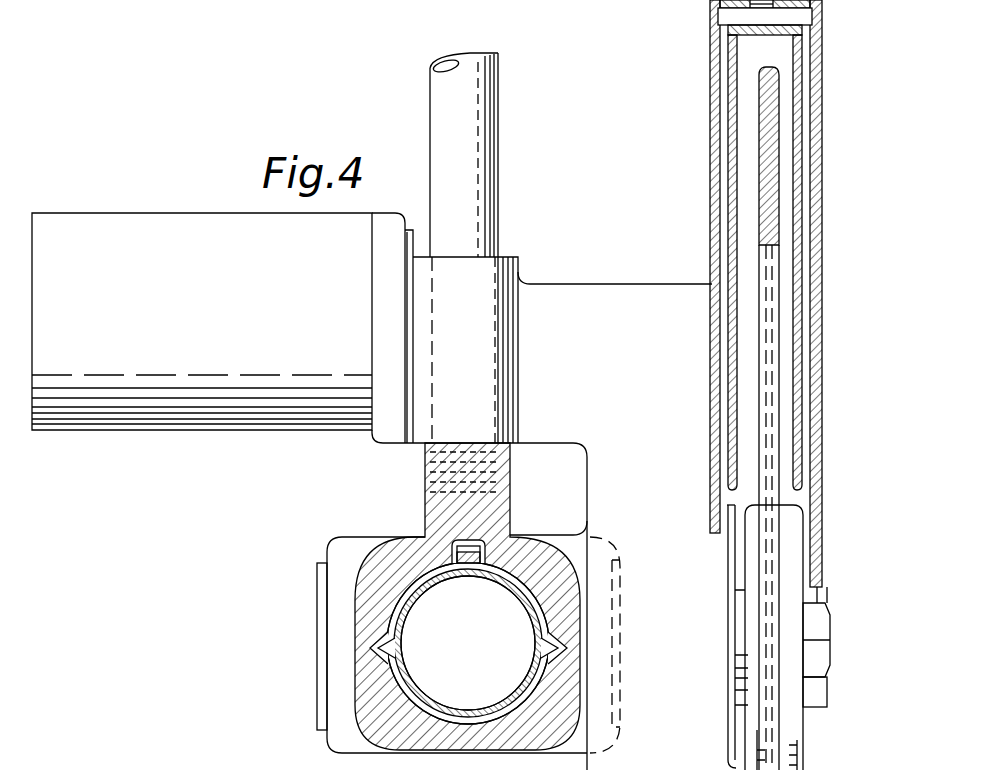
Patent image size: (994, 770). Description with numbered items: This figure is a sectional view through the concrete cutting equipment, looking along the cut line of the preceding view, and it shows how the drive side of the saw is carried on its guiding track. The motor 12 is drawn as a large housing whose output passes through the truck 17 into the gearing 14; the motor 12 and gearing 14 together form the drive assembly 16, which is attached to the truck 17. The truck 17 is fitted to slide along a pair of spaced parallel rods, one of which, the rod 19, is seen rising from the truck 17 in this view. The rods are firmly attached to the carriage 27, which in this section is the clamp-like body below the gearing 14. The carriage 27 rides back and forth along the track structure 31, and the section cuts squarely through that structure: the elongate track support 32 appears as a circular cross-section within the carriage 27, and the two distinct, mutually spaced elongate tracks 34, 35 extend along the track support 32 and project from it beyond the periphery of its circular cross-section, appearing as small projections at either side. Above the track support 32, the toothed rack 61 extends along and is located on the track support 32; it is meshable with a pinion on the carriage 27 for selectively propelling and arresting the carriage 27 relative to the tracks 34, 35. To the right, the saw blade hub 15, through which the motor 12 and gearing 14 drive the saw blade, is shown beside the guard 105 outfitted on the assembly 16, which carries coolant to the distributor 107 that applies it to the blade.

The motor 12 is at (210, 364).
The gearing 14 is at (661, 283).
The saw blade hub 15 is at (752, 542).
The drive assembly 16 is at (562, 268).
The truck 17 is at (508, 253).
The rod 19 is at (500, 173).
The carriage 27 is at (393, 548).
The track structure 31 is at (386, 605).
The track support 32 is at (419, 694).
The track 34 is at (572, 627).
The track 35 is at (375, 643).
The toothed rack 61 is at (506, 545).
The guard 105 is at (820, 70).
The distributor 107 is at (788, 161).